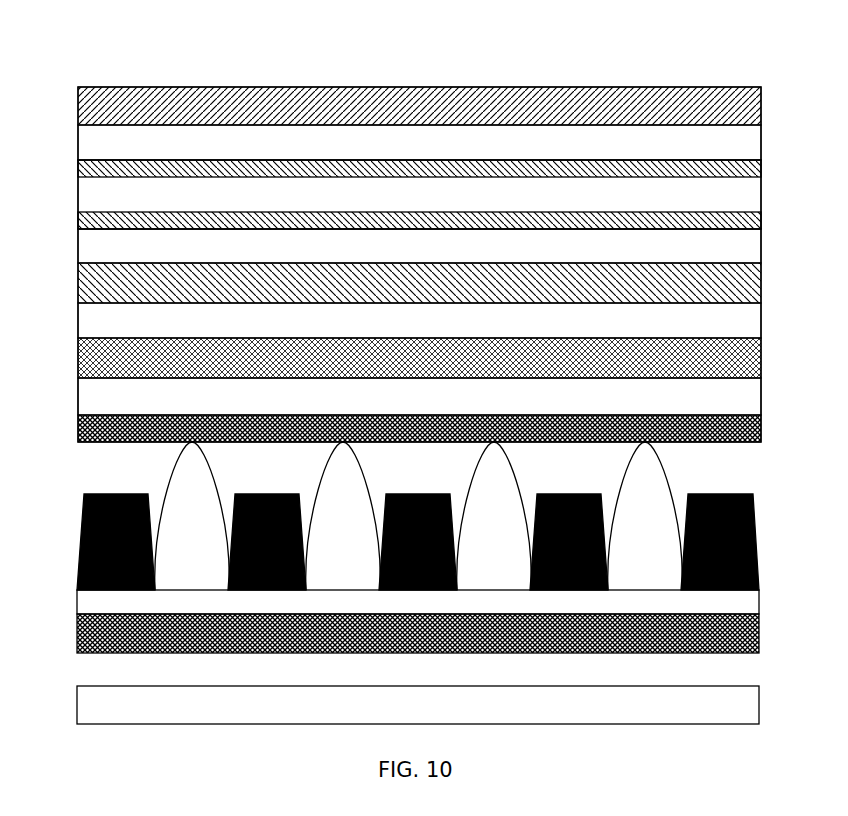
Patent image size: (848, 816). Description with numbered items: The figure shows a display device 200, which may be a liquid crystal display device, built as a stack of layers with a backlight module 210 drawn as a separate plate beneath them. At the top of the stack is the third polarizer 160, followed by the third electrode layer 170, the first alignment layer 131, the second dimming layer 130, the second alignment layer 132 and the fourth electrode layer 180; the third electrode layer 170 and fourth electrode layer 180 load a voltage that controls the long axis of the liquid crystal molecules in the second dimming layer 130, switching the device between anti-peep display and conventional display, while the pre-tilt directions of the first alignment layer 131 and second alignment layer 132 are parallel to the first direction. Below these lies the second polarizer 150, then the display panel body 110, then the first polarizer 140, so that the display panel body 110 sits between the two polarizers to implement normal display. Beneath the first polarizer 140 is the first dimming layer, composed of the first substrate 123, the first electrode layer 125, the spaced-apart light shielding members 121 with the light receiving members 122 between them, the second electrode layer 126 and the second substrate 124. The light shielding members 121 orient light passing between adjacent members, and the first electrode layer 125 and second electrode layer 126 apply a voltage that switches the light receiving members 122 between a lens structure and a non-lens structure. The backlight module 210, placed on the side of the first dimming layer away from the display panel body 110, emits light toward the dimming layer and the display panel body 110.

The display device 200 is at (109, 52).
The third polarizer 160 is at (100, 111).
The third electrode layer 170 is at (740, 152).
The first alignment layer 131 is at (80, 170).
The second dimming layer 130 is at (742, 208).
The second alignment layer 132 is at (88, 223).
The fourth electrode layer 180 is at (742, 262).
The second polarizer 150 is at (100, 291).
The display panel body 110 is at (742, 332).
The first polarizer 140 is at (105, 367).
The first substrate 123 is at (740, 396).
The first electrode layer 125 is at (78, 428).
The light shielding members 121 is at (753, 535).
The light receiving members 122 is at (662, 488).
The second electrode layer 126 is at (740, 606).
The second substrate 124 is at (742, 636).
The backlight module 210 is at (95, 706).